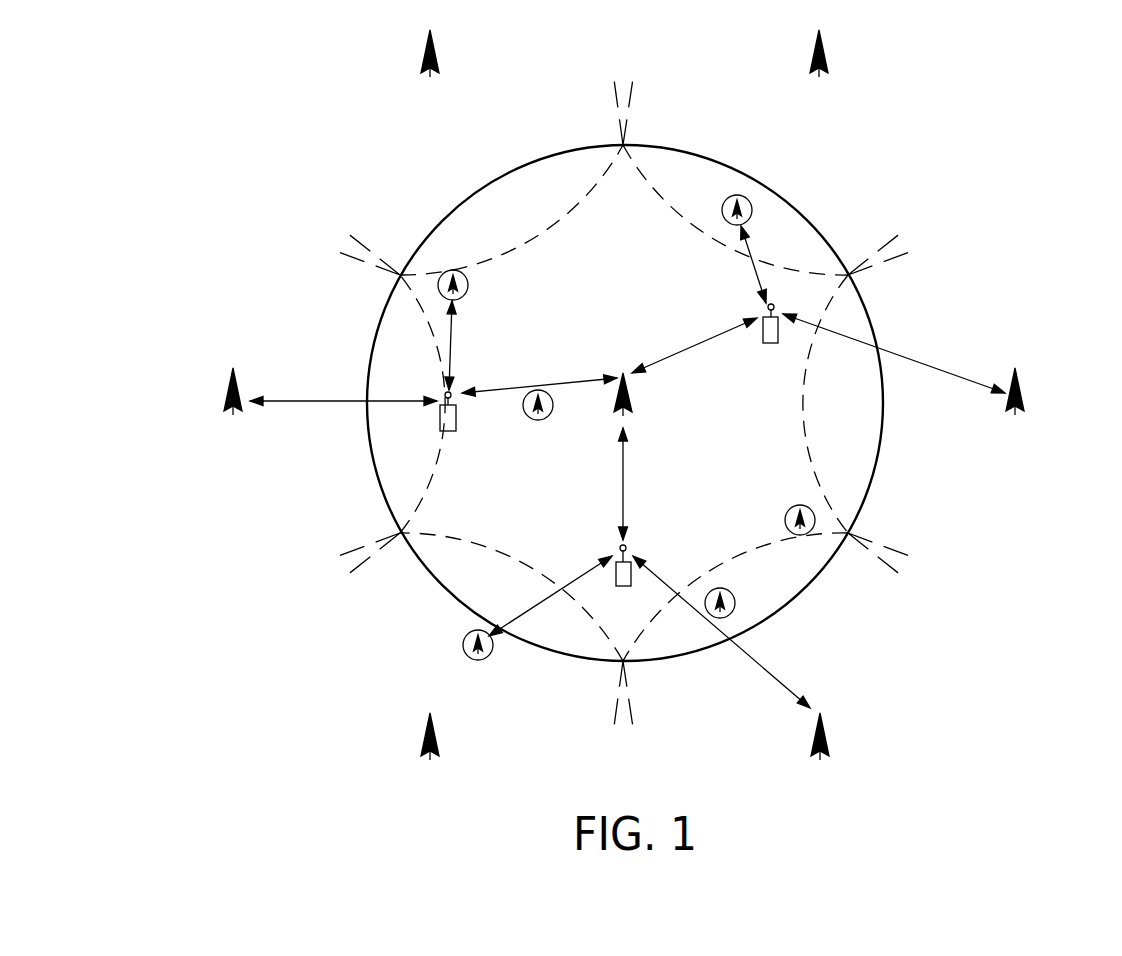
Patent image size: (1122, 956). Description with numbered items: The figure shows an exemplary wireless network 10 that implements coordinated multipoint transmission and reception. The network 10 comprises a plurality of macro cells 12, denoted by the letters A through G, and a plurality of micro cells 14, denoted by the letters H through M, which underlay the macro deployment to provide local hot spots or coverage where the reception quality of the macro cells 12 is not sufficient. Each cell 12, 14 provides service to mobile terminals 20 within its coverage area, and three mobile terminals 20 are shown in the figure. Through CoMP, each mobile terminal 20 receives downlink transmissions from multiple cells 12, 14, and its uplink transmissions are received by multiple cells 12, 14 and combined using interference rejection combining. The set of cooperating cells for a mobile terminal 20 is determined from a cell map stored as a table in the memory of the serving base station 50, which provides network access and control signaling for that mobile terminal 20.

The wireless network 10 is at (968, 90).
The macro cell 12 is at (680, 147).
The micro cell 14 is at (465, 298).
The mobile terminal 20 is at (438, 418).
The serving base station 50 is at (229, 394).